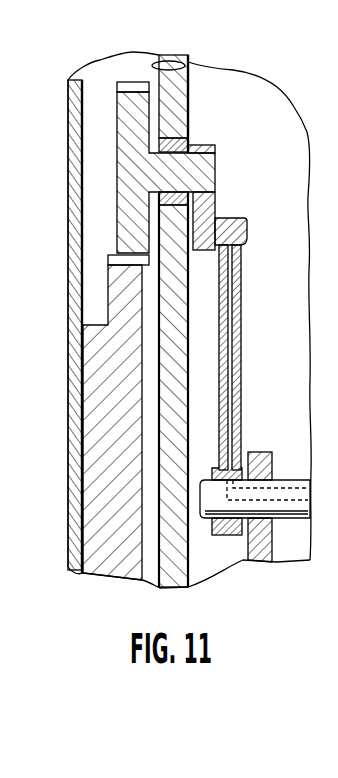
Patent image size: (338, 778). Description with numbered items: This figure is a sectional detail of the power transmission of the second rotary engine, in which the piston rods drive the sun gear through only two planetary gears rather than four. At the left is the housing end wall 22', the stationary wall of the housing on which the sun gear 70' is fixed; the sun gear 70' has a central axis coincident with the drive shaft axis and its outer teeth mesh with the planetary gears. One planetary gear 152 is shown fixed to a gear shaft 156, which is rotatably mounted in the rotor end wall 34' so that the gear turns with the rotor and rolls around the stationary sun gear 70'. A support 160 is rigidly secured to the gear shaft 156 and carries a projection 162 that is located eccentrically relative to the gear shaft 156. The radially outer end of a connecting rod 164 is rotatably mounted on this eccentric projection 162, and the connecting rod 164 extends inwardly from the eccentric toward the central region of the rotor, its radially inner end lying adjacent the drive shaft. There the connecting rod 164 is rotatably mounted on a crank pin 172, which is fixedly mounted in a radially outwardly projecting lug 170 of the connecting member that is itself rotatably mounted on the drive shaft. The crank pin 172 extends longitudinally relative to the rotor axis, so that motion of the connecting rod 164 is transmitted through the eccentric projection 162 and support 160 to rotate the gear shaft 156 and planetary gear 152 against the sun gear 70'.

The housing end wall 22' is at (58, 321).
The rotor end wall 34' is at (191, 312).
The sun gear 70' is at (88, 422).
The planetary gear 152 is at (119, 118).
The gear shaft 156 is at (205, 158).
The support 160 is at (207, 203).
The projection 162 is at (247, 233).
The connecting rod 164 is at (243, 327).
The lug 170 is at (253, 452).
The crank pin 172 is at (293, 480).